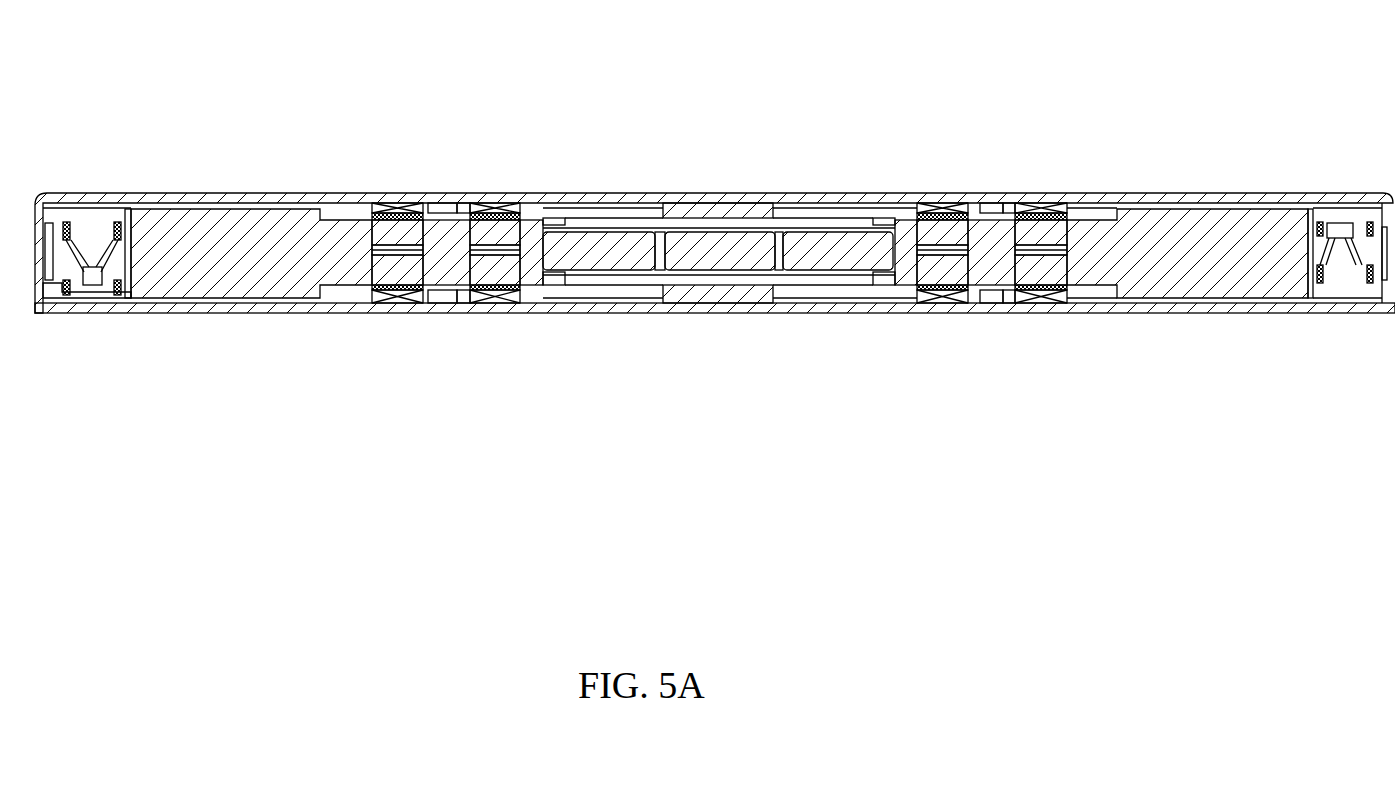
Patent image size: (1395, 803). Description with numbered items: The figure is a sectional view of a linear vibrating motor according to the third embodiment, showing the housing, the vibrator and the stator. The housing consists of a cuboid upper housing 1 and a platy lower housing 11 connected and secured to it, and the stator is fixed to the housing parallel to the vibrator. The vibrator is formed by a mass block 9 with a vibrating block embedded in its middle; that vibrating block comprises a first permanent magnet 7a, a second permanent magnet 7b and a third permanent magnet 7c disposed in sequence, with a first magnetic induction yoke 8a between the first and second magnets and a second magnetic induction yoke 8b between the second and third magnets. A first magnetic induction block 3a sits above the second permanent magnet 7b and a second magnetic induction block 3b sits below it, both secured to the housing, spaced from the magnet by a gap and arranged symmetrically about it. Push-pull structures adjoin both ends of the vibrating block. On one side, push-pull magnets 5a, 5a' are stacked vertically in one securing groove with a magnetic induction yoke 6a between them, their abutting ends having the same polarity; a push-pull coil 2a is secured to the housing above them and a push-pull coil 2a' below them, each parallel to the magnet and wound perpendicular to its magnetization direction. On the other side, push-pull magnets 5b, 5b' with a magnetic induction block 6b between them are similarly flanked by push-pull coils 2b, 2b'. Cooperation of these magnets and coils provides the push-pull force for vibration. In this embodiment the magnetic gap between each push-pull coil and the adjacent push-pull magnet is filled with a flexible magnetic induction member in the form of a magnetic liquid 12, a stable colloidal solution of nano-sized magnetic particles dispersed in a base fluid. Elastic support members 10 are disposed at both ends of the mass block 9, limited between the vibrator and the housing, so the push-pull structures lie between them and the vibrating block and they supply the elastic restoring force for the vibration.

The upper housing 1 is at (1178, 196).
The push-pull coil 2a is at (958, 151).
The push-pull coil 2a' is at (978, 331).
The push-pull coil 2b is at (554, 151).
The push-pull coil 2b' is at (505, 333).
The first magnetic induction block 3a is at (712, 203).
The second magnetic induction block 3b is at (712, 296).
The push-pull magnet 5a is at (1051, 146).
The push-pull magnet 5a' is at (1075, 328).
The push-pull magnet 5b is at (426, 146).
The push-pull magnet 5b' is at (420, 333).
The magnetic induction yoke 6a is at (1055, 248).
The magnetic induction block 6b is at (412, 248).
The first permanent magnet 7a is at (587, 250).
The second permanent magnet 7b is at (727, 245).
The third permanent magnet 7c is at (832, 240).
The first magnetic induction yoke 8a is at (661, 262).
The second magnetic induction yoke 8b is at (783, 267).
The mass block 9 is at (193, 223).
The elastic support member 10 is at (72, 222).
The lower housing 11 is at (1178, 305).
The magnetic liquid 12 is at (510, 288).